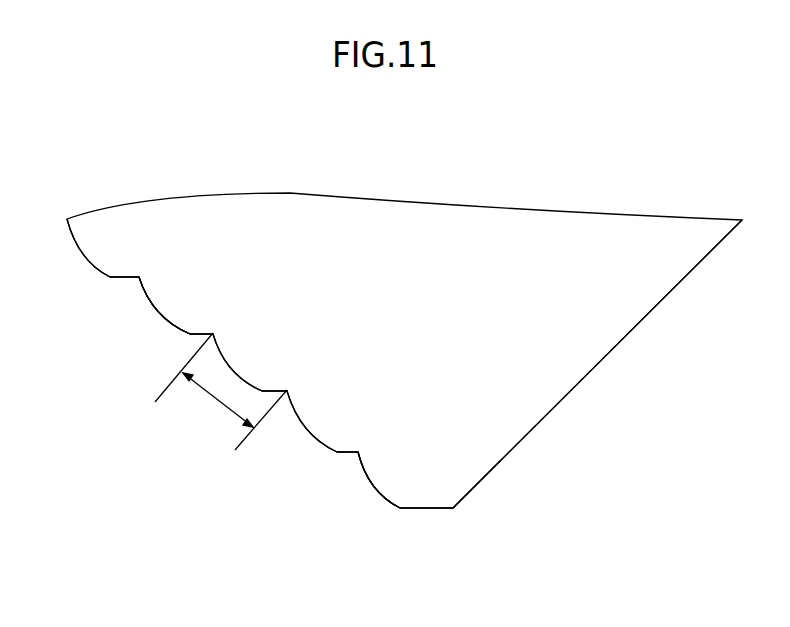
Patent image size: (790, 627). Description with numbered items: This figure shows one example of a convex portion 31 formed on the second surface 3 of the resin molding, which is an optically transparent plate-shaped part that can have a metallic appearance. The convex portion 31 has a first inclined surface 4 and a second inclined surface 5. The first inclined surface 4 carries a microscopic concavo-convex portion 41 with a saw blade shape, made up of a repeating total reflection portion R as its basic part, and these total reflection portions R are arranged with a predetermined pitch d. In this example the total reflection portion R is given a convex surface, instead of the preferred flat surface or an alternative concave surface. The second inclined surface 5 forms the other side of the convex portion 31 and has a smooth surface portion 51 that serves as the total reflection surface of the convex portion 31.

The second surface 3 is at (546, 413).
The convex portion 31 is at (443, 488).
The first inclined surface 4 is at (77, 245).
The concavo-convex portion 41 is at (400, 497).
The second inclined surface 5 is at (500, 460).
The smooth surface portion 51 is at (482, 487).
The total reflection portion R is at (158, 312).
The pitch d is at (221, 391).